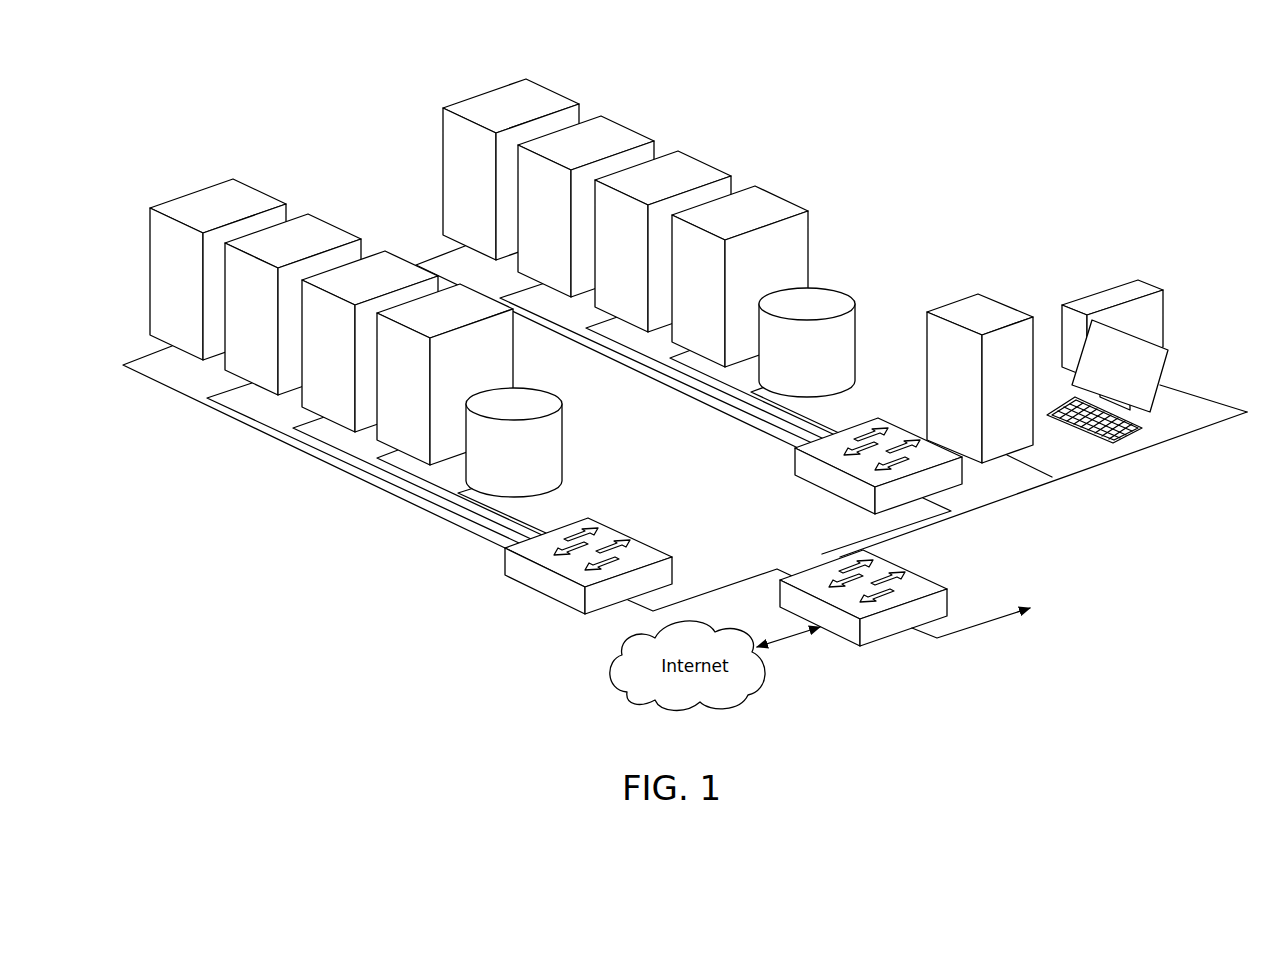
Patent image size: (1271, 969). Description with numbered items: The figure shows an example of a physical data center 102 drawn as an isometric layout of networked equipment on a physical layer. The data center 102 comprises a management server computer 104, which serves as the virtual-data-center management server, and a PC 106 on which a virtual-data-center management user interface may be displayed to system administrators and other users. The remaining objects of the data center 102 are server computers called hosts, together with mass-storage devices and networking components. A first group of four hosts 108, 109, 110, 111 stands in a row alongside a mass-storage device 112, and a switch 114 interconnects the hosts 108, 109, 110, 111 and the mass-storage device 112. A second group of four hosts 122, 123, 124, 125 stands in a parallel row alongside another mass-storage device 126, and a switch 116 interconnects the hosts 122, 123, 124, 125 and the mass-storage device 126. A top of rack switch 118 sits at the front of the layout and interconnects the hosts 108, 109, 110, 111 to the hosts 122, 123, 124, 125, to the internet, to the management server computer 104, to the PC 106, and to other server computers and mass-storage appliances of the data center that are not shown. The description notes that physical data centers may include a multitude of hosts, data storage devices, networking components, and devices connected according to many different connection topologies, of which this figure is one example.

The data center 102 is at (413, 570).
The management server computer 104 is at (965, 308).
The PC 106 is at (1115, 295).
The host 108 is at (243, 188).
The host 109 is at (320, 223).
The host 110 is at (398, 258).
The host 111 is at (513, 357).
The mass-storage device 112 is at (563, 447).
The switch 114 is at (637, 538).
The switch 116 is at (793, 462).
The top of rack switch 118 is at (950, 585).
The host 122 is at (540, 92).
The host 123 is at (617, 127).
The host 124 is at (693, 162).
The host 125 is at (775, 198).
The mass-storage device 126 is at (823, 297).